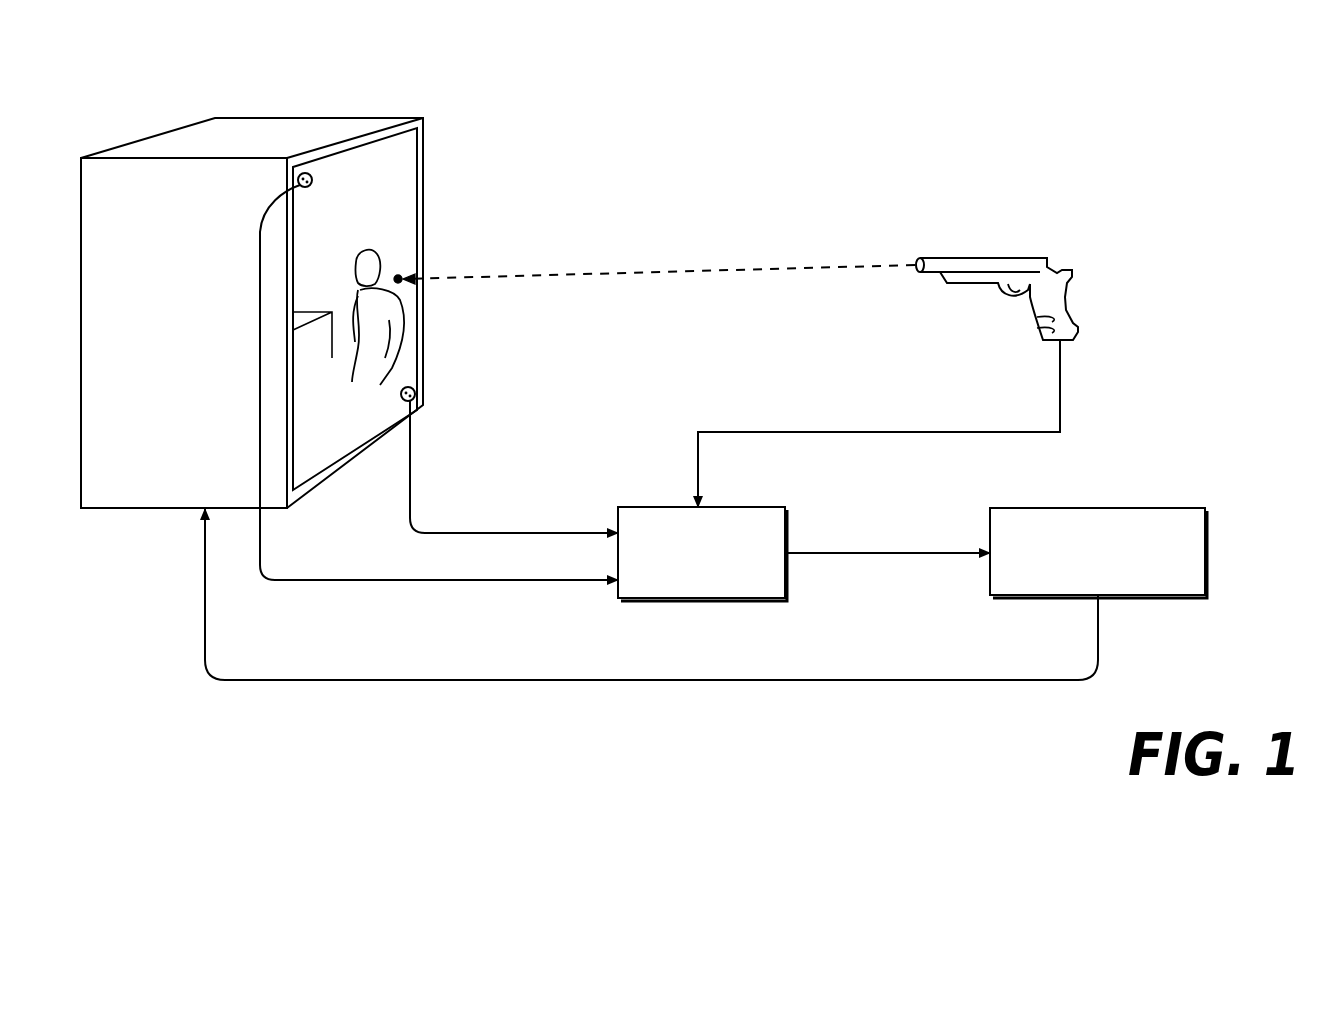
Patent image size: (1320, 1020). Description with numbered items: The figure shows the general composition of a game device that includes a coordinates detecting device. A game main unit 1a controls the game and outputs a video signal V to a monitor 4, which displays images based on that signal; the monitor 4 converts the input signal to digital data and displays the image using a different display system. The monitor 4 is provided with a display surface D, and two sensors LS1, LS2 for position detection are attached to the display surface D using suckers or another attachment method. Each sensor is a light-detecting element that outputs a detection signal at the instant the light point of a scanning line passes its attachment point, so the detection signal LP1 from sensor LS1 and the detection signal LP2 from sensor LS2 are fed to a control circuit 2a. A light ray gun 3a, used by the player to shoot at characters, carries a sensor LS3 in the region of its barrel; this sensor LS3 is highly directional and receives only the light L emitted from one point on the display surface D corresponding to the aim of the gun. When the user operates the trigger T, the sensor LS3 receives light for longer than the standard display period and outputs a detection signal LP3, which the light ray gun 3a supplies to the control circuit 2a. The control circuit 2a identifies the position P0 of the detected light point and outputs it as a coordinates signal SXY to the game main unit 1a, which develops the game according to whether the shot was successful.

The monitor 4 is at (342, 118).
The sensor LS1 is at (303, 173).
The display surface D is at (396, 153).
The position of the light point P0 is at (398, 279).
The light L is at (718, 267).
The sensor LS3 is at (915, 257).
The light ray gun 3a is at (997, 233).
The trigger T is at (903, 311).
The detection signal LP3 is at (752, 432).
The control circuit 2a is at (750, 507).
The sensor LS2 is at (418, 398).
The detection signal LP2 is at (525, 533).
The detection signal LP1 is at (437, 580).
The game main unit 1a is at (1098, 508).
The coordinates signal SXY is at (883, 553).
The video signal V is at (702, 680).